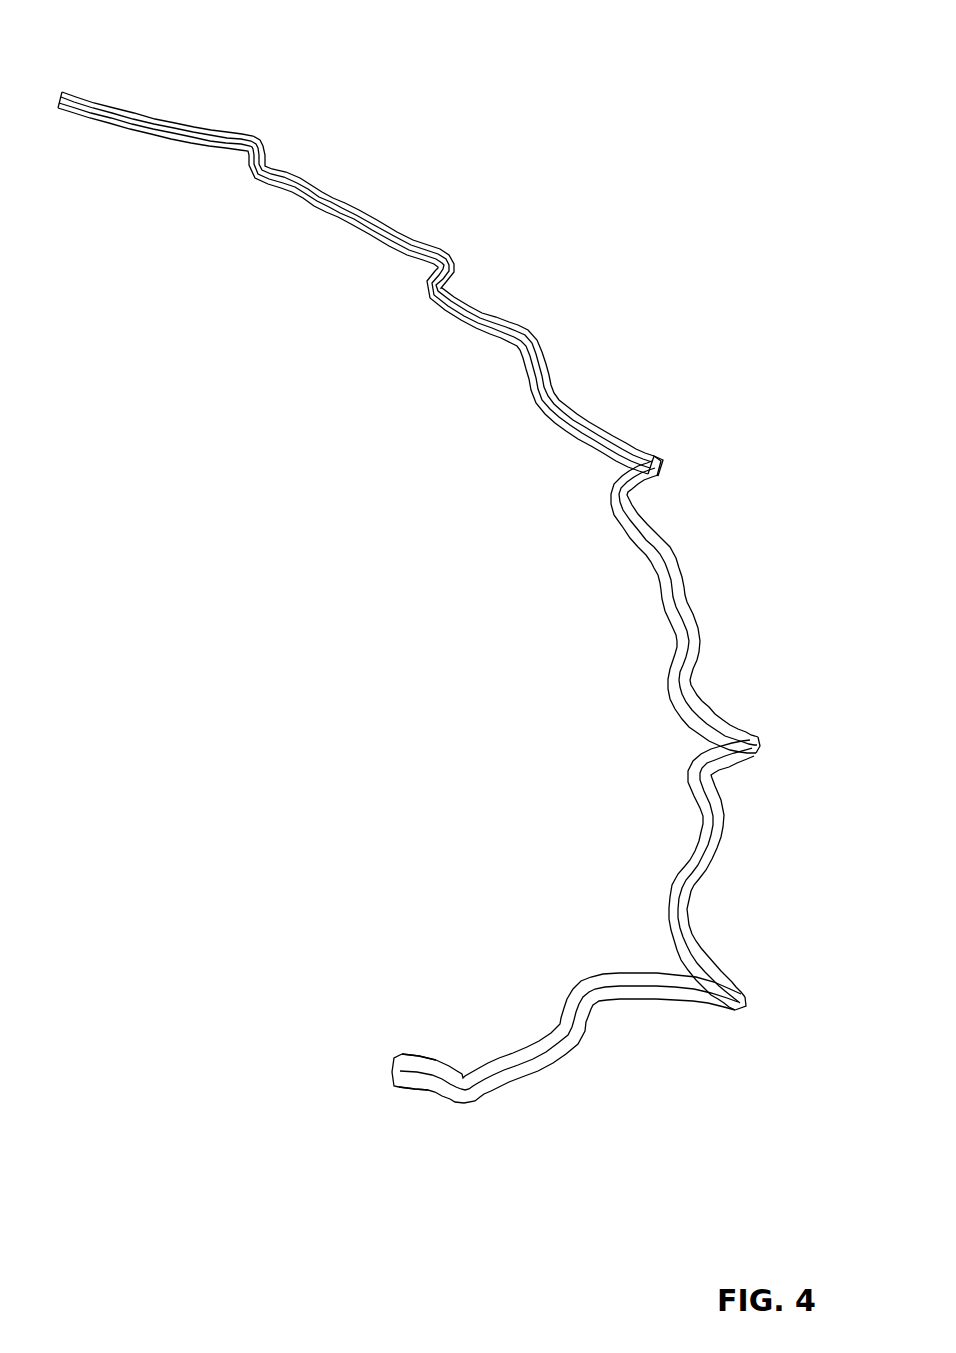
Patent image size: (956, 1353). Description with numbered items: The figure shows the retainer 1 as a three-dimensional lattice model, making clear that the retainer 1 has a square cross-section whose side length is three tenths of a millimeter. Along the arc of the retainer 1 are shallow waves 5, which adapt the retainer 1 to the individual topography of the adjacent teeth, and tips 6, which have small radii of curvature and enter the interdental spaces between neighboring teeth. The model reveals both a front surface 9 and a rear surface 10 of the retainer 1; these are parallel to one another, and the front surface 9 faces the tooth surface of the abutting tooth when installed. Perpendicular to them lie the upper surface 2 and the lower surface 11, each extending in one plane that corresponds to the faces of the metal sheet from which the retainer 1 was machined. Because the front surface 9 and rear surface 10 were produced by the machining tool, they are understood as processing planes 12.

The retainer 1 is at (434, 206).
The upper surface 2 is at (655, 467).
The shallow waves 5 is at (517, 340).
The tips 6 is at (668, 466).
The front surface 9 is at (434, 1092).
The rear surface 10 is at (693, 770).
The lower surface 11 is at (662, 995).
The processing planes 12 is at (644, 946).